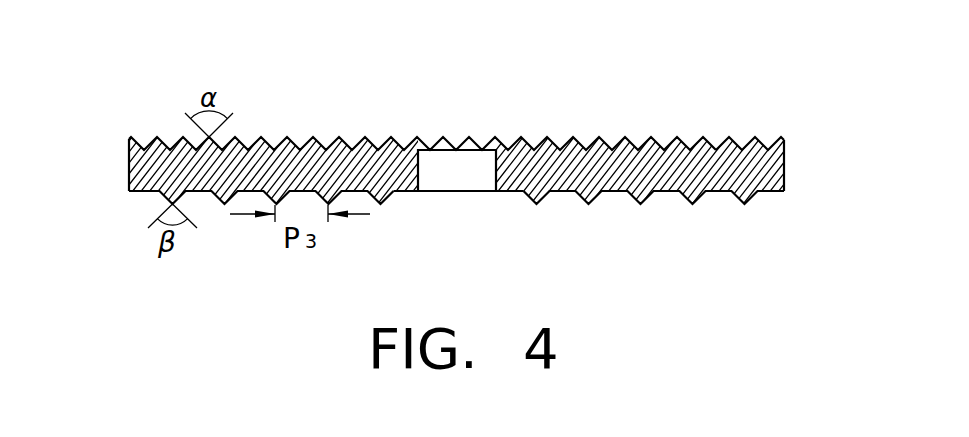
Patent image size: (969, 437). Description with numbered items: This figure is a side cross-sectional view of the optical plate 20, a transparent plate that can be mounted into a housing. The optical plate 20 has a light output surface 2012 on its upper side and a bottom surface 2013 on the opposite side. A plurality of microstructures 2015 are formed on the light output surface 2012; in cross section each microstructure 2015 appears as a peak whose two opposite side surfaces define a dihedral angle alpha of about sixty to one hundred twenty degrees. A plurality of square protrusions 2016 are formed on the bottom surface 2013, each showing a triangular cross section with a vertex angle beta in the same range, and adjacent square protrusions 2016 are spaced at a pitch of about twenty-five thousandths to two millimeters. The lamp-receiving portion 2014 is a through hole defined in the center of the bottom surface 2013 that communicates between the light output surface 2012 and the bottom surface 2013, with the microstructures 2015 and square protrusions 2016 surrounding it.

The optical plate 20 is at (137, 78).
The light output surface 2012 is at (508, 150).
The bottom surface 2013 is at (398, 192).
The lamp-receiving portion 2014 is at (443, 150).
The microstructures 2015 is at (730, 138).
The square protrusions 2016 is at (582, 193).